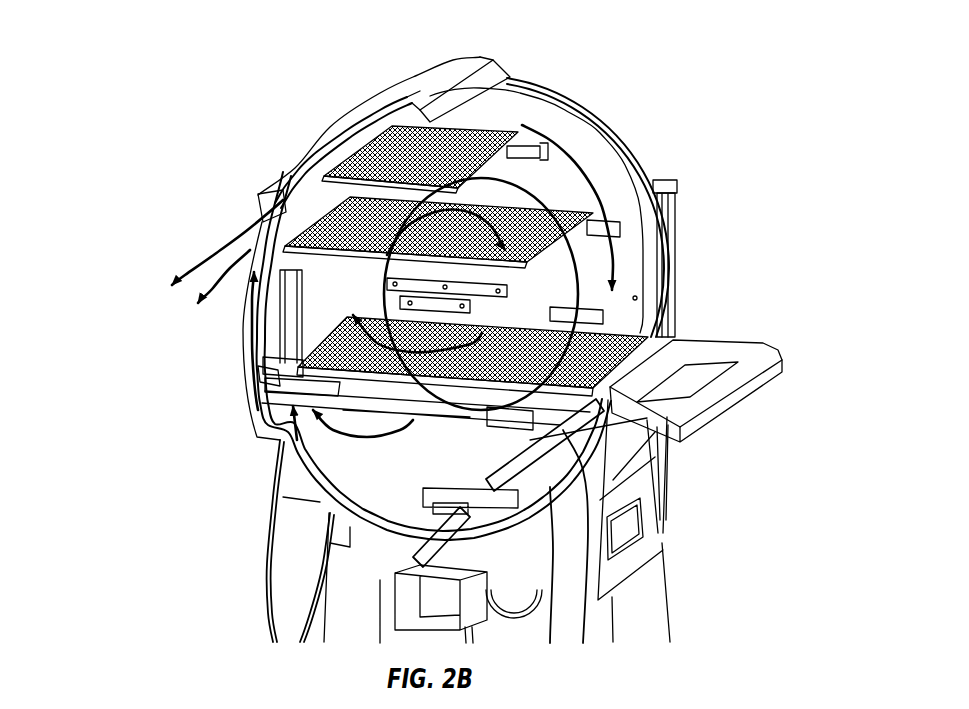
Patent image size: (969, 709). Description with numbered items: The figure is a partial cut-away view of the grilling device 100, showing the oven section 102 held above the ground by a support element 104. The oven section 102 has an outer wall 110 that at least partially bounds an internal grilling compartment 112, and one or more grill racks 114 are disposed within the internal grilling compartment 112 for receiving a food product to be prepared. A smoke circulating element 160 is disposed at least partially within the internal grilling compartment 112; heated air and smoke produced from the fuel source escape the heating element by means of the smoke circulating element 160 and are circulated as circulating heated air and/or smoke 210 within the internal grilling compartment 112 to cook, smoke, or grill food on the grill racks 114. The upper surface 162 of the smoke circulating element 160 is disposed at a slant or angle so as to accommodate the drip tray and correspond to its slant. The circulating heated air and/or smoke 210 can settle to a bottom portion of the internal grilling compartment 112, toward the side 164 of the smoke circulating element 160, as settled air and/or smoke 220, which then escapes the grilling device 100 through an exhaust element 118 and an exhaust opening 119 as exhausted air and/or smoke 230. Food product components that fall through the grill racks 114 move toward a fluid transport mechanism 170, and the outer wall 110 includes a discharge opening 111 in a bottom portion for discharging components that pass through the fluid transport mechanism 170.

The grilling device 100 is at (170, 80).
The oven section 102 is at (320, 130).
The support element 104 is at (257, 513).
The outer wall 110 is at (420, 91).
The discharge opening 111 is at (630, 580).
The internal grilling compartment 112 is at (570, 190).
The grill rack 114 is at (608, 345).
The exhaust element 118 is at (253, 380).
The exhaust opening 119 is at (260, 212).
The smoke circulating element 160 is at (383, 490).
The upper surface 162 is at (575, 425).
The side 164 is at (357, 460).
The fluid transport mechanism 170 is at (600, 458).
The circulating heated air and/or smoke 210 is at (483, 217).
The settled air and/or smoke 220 is at (590, 552).
The exhausted air and/or smoke 230 is at (205, 250).